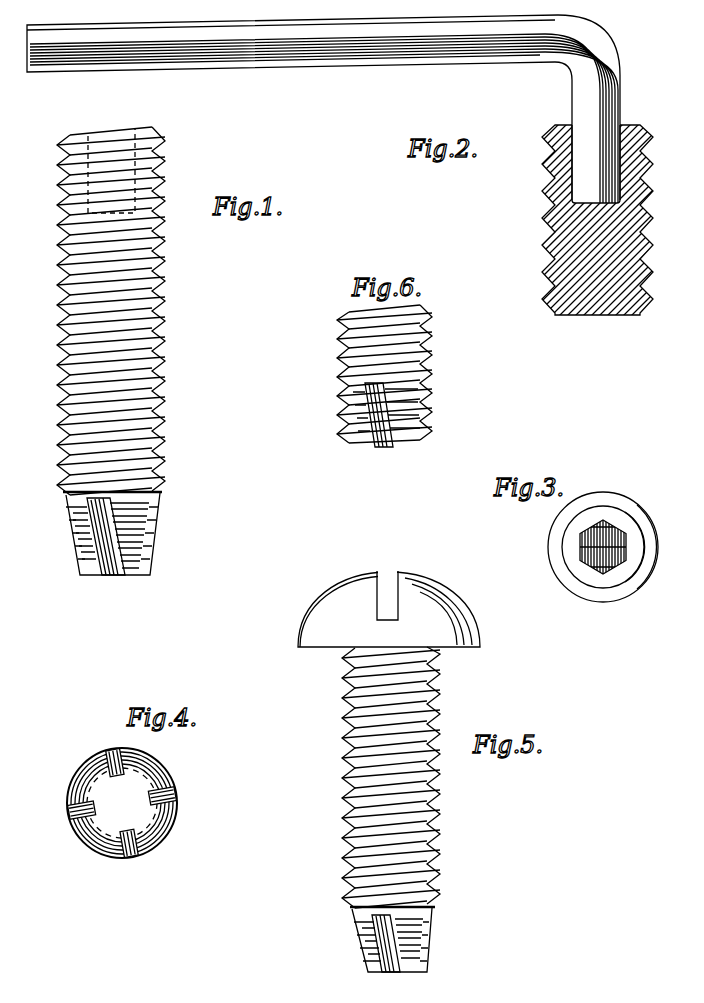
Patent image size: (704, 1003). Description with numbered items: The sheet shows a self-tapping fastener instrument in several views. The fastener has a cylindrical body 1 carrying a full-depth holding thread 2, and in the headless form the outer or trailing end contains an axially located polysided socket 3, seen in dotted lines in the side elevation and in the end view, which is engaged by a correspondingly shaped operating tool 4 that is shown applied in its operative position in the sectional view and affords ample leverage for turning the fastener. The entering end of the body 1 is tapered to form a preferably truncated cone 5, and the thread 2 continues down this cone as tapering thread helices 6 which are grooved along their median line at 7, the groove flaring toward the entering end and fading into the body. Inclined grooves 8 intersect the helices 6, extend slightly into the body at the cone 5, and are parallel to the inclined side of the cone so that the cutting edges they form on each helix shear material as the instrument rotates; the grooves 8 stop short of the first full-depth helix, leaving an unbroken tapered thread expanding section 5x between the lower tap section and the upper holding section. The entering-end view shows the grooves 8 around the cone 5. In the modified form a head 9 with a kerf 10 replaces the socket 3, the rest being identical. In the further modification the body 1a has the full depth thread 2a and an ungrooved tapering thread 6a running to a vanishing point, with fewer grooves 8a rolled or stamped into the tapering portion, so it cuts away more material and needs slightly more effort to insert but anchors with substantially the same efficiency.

In FIG. 1, the body 1 is at (63, 178).
In FIG. 2, the body 1 is at (542, 160).
In FIG. 3, the body 1 is at (623, 522).
In FIG. 4, the body 1 is at (80, 773).
In FIG. 5, the body 1 is at (352, 687).
In FIG. 1, the thread 2 is at (160, 232).
In FIG. 2, the thread 2 is at (545, 246).
In FIG. 3, the thread 2 is at (550, 553).
In FIG. 5, the thread 2 is at (435, 693).
In FIG. 1, the polysided socket 3 is at (166, 173).
In FIG. 2, the polysided socket 3 is at (572, 182).
In FIG. 3, the polysided socket 3 is at (613, 547).
In FIG. 2, the operating tool 4 is at (393, 60).
In FIG. 1, the cone 5 is at (78, 570).
In FIG. 4, the cone 5 is at (88, 845).
In FIG. 5, the cone 5 is at (368, 968).
In FIG. 1, the tapered thread expanding section 5x is at (163, 482).
In FIG. 5, the tapered thread expanding section 5x is at (355, 905).
In FIG. 1, the tapering thread helices 6 is at (70, 526).
In FIG. 4, the tapering thread helices 6 is at (152, 767).
In FIG. 5, the tapering thread helices 6 is at (432, 930).
In FIG. 1, the groove 7 is at (160, 535).
In FIG. 5, the groove 7 is at (360, 945).
In FIG. 1, the grooves 8 is at (160, 497).
In FIG. 4, the grooves 8 is at (112, 757).
In FIG. 5, the grooves 8 is at (433, 913).
In FIG. 5, the head 9 is at (443, 638).
In FIG. 5, the kerf 10 is at (387, 592).
In FIG. 6, the body 1a is at (353, 318).
In FIG. 6, the full depth thread 2a is at (430, 343).
In FIG. 6, the tapering thread 6a is at (430, 399).
In FIG. 6, the grooves 8a is at (387, 448).